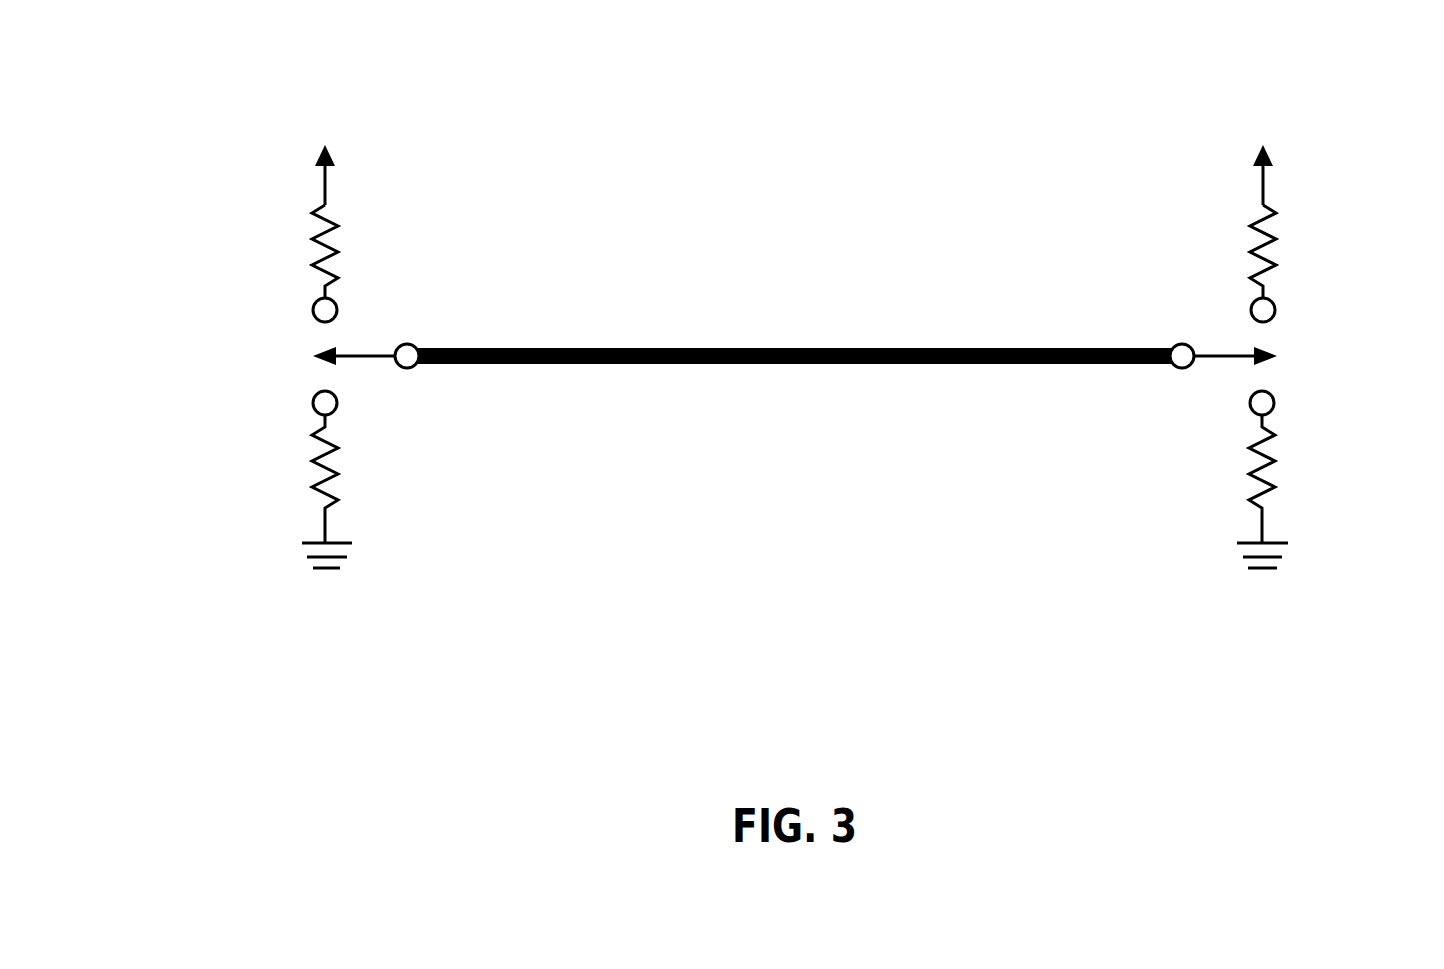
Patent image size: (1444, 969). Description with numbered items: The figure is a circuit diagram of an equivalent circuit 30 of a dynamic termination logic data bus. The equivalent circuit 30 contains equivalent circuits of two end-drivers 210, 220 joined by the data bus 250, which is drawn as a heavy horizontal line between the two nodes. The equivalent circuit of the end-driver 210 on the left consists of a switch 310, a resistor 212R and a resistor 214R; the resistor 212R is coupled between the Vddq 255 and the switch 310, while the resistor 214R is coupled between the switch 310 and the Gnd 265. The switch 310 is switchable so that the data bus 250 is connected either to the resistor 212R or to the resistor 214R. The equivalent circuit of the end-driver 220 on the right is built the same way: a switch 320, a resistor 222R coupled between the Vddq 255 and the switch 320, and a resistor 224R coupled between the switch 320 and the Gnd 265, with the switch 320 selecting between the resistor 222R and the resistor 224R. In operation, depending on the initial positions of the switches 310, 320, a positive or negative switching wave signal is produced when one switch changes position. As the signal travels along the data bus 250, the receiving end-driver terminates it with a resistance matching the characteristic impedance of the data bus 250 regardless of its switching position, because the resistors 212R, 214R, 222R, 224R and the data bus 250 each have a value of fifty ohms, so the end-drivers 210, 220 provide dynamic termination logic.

The equivalent circuit 30 is at (523, 676).
The end-driver 210 is at (410, 440).
The end-driver 220 is at (1179, 441).
The data bus 250 is at (465, 343).
The Vddq 255 is at (325, 122).
The Gnd 265 is at (315, 592).
The resistor 212R is at (302, 215).
The resistor 214R is at (302, 498).
The resistor 222R is at (1287, 215).
The resistor 224R is at (1285, 497).
The switch 310 is at (302, 357).
The switch 320 is at (1287, 357).